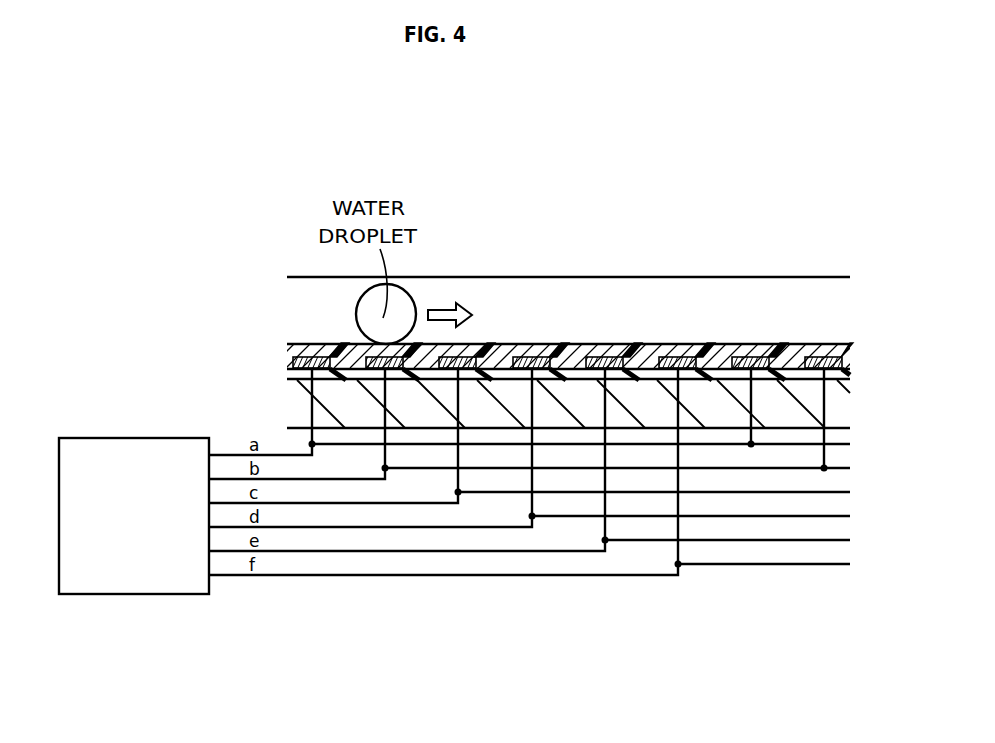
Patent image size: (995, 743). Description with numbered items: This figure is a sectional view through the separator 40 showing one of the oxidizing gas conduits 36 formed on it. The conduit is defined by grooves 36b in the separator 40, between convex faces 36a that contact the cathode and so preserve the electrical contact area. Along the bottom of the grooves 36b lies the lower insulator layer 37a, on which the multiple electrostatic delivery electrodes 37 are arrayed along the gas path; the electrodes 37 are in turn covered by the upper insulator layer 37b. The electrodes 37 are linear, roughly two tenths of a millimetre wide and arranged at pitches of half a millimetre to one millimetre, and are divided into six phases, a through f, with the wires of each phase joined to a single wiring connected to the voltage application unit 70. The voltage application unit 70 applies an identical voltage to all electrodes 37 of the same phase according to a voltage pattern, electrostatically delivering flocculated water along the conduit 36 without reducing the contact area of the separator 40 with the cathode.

The separator 40 is at (821, 270).
The electrostatic delivery electrodes 37 is at (583, 355).
The lower insulator layer 37a is at (485, 348).
The upper insulator layer 37b is at (612, 348).
The oxidizing gas conduits 36 is at (567, 270).
The convex face 36a is at (686, 277).
The grooves 36b is at (712, 360).
The voltage application unit 70 is at (134, 438).